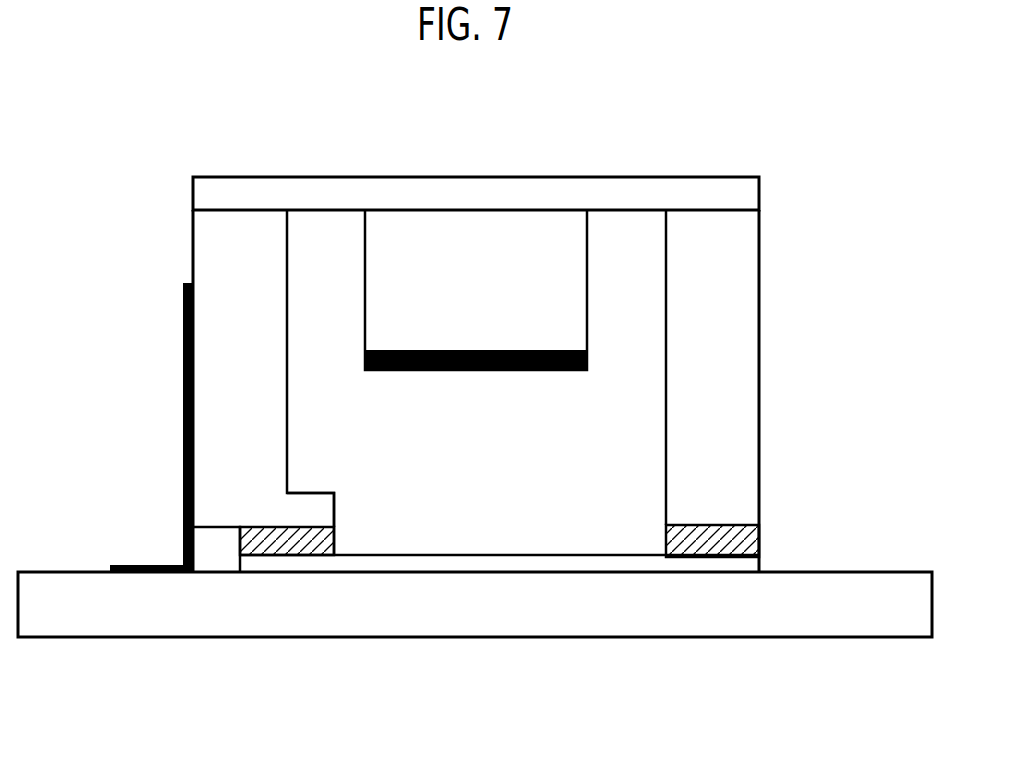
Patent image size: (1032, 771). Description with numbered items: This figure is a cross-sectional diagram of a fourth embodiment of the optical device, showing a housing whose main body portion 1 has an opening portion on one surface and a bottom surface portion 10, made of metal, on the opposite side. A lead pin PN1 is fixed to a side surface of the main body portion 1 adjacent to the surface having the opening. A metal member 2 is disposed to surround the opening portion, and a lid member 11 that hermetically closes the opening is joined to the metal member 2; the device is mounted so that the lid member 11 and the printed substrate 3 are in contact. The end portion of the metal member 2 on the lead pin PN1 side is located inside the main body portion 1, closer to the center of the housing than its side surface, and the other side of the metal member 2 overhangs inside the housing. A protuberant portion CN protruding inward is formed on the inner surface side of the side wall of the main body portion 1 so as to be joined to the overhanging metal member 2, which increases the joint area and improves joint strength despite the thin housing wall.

The bottom surface portion 10 is at (717, 197).
The main body portion 1 is at (718, 318).
The lead pin PN1 is at (182, 550).
The protuberant portion CN is at (318, 513).
The metal member 2 is at (278, 548).
The lid member 11 is at (592, 563).
The printed substrate 3 is at (843, 603).